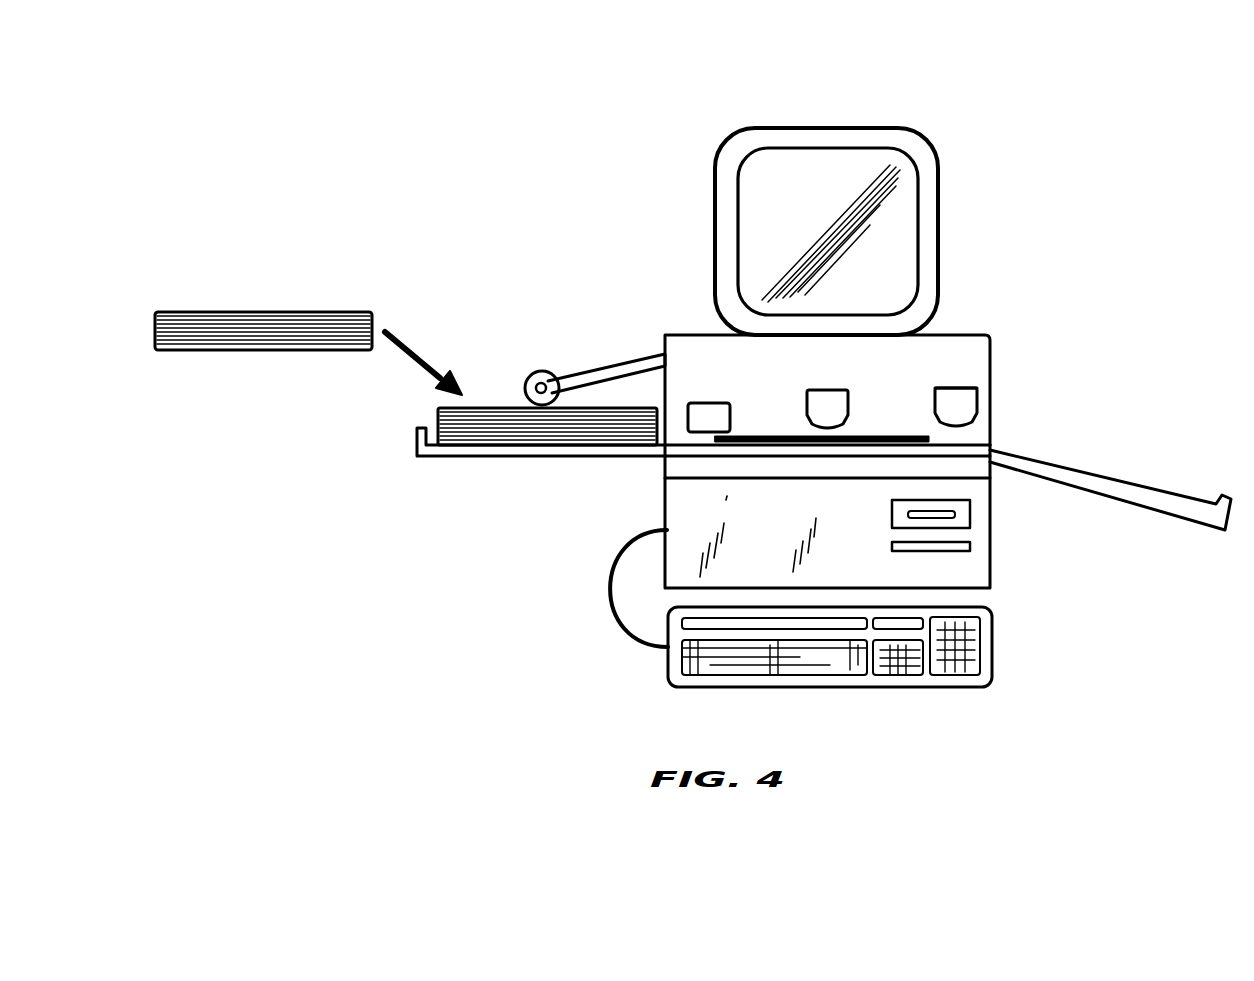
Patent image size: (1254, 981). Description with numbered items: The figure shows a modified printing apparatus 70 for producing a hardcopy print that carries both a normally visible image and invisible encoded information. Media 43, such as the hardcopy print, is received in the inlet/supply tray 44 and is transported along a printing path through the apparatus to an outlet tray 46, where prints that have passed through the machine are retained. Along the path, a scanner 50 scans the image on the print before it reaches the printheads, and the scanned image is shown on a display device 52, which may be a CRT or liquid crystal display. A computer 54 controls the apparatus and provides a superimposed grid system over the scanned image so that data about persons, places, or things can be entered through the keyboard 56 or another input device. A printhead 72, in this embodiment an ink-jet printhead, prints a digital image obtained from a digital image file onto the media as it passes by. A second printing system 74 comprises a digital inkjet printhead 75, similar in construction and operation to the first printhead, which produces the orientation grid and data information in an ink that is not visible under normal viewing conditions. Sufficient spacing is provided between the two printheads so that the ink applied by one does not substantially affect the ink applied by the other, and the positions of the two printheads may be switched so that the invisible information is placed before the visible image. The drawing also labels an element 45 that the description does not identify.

The media 43 is at (268, 308).
The inlet/supply tray 44 is at (487, 458).
The processing station housing 45 is at (977, 440).
The outlet tray 46 is at (1110, 483).
The scanner 50 is at (706, 403).
The display device 52 is at (923, 178).
The computer 54 is at (993, 530).
The keyboard 56 is at (993, 642).
The modified printing apparatus 70 is at (888, 98).
The printhead 72 is at (826, 390).
The second printing system 74 is at (947, 388).
The digital inkjet printhead 75 is at (967, 387).